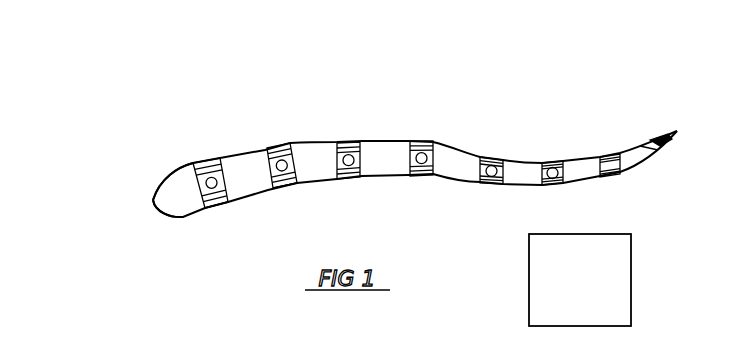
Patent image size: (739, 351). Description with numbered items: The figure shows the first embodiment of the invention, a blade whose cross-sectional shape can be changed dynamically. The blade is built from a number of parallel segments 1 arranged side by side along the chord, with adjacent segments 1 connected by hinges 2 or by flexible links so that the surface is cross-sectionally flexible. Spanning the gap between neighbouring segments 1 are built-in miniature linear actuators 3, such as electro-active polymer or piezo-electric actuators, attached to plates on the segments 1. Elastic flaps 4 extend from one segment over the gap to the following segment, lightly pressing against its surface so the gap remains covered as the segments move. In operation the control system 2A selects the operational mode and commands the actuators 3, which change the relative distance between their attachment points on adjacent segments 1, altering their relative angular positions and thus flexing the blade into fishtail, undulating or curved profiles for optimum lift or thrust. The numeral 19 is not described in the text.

The segment 1 is at (532, 173).
The hinge 2 is at (362, 142).
The actuator 3 is at (337, 162).
The elastic flap 4 is at (272, 191).
The head 19 is at (163, 197).
The control system 2A is at (553, 183).